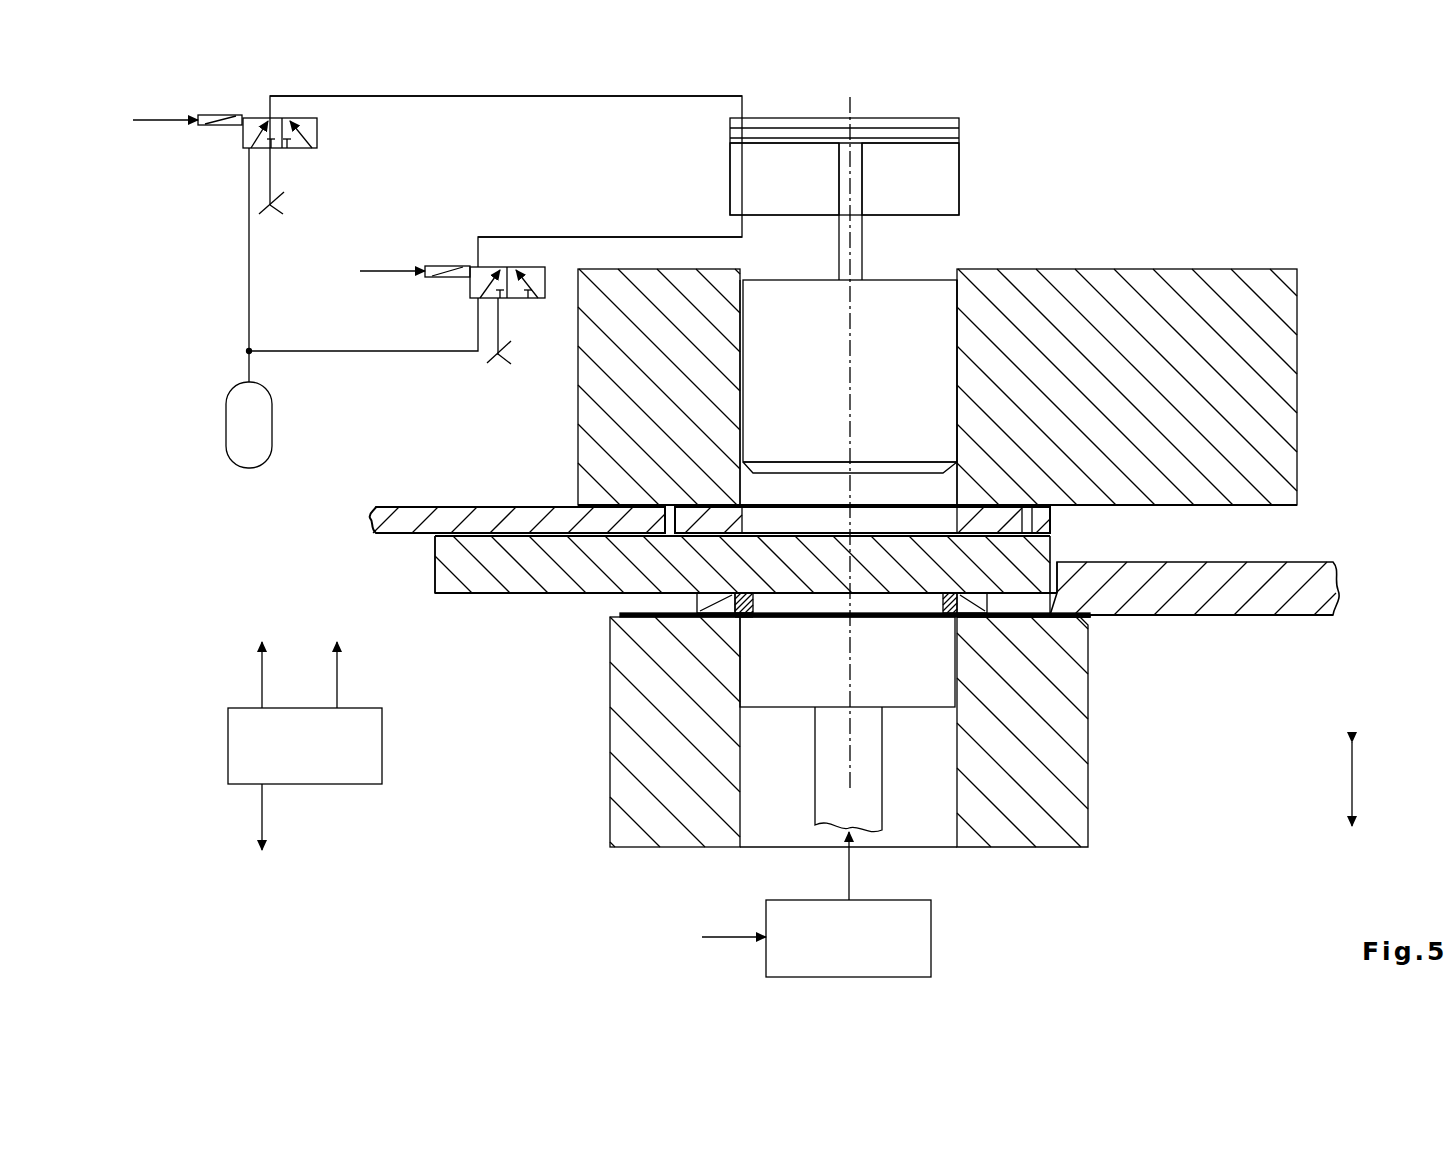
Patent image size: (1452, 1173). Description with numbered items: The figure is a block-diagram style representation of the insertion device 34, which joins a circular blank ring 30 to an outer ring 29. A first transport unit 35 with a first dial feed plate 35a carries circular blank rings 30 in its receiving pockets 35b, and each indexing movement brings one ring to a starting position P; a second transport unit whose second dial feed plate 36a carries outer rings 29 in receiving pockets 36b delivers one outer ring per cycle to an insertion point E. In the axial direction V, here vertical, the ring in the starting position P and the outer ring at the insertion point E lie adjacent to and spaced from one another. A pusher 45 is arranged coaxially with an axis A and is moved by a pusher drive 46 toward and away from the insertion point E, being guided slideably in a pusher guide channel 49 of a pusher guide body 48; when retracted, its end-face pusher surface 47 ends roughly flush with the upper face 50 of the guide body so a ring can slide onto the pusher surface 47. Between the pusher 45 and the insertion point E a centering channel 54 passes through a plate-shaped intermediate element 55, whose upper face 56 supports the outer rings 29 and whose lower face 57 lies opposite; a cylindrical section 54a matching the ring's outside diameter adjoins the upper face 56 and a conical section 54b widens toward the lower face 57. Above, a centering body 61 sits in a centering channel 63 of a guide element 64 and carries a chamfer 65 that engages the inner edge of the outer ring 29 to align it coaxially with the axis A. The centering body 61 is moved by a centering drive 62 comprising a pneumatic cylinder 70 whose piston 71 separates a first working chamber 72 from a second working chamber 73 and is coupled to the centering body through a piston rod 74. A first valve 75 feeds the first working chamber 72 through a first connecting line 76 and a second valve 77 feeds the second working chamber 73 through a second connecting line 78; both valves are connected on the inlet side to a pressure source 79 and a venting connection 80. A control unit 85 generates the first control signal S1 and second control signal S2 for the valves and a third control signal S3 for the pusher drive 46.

The first control signal S1 is at (147, 117).
The second control signal S2 is at (387, 270).
The third control signal S3 is at (165, 810).
The first valve 75 is at (242, 139).
The second valve 77 is at (470, 290).
The first connecting line 76 is at (531, 100).
The second connecting line 78 is at (542, 236).
The venting connection 80 is at (282, 201).
The centering drive 62 is at (215, 295).
The pressure source 79 is at (236, 418).
The axis A is at (852, 105).
The pneumatic cylinder 70 is at (962, 193).
The piston 71 is at (940, 137).
The first working chamber 72 is at (940, 125).
The second working chamber 73 is at (932, 164).
The piston rod 74 is at (856, 253).
The insertion device 34 is at (1336, 190).
The centering body 61 is at (925, 348).
The guide element 64 is at (1272, 354).
The centering channel 63 is at (958, 412).
The chamfer 65 is at (927, 467).
The insertion point E is at (1010, 503).
The second dial feed plate 36a is at (526, 516).
The receiving pockets 36b is at (683, 518).
The outer ring 29 is at (662, 504).
The upper face 56 is at (490, 532).
The centering channel 54 is at (735, 558).
The cylindrical section 54a is at (947, 550).
The conical section 54b is at (987, 620).
The pusher surface 47 is at (806, 608).
The intermediate element 55 is at (452, 580).
The lower face 57 is at (468, 596).
The upper face 50 is at (630, 613).
The circular blank ring 30 is at (737, 622).
The starting position P is at (736, 621).
The first transport unit 35 is at (1357, 549).
The first dial feed plate 35a is at (1195, 605).
The receiving pockets 35b is at (987, 623).
The pusher guide body 48 is at (1066, 757).
The pusher 45 is at (940, 680).
The pusher guide channel 49 is at (905, 772).
The pusher drive 46 is at (923, 932).
The control unit 85 is at (245, 743).
The axial direction V is at (1355, 778).